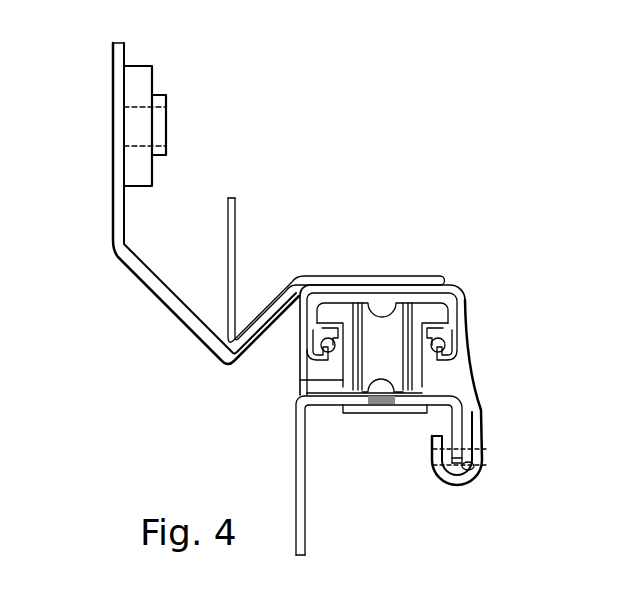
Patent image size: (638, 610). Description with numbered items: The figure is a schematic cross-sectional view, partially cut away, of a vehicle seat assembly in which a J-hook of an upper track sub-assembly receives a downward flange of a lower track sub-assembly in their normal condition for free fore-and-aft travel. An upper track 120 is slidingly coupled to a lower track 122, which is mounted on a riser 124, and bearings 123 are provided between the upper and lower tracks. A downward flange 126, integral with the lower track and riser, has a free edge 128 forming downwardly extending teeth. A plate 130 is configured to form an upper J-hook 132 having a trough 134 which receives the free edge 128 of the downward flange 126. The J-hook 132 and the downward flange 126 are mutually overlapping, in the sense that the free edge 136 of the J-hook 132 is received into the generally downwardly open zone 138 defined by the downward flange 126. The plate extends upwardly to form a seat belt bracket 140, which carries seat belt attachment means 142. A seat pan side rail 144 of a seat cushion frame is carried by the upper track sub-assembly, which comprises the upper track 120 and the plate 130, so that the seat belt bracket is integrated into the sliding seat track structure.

The upper track 120 is at (308, 357).
The lower track 122 is at (313, 383).
The bearings 123 is at (322, 349).
The riser 124 is at (391, 471).
The downward flange 126 is at (387, 416).
The free edge 128 is at (460, 455).
The plate 130 is at (423, 381).
The upper J-hook 132 is at (484, 447).
The trough 134 is at (472, 465).
The free edge of J-hook 136 is at (432, 445).
The downwardly open zone 138 is at (435, 424).
The seat belt bracket 140 is at (113, 218).
The seat belt attachment means 142 is at (151, 82).
The seat pan side rail 144 is at (234, 212).